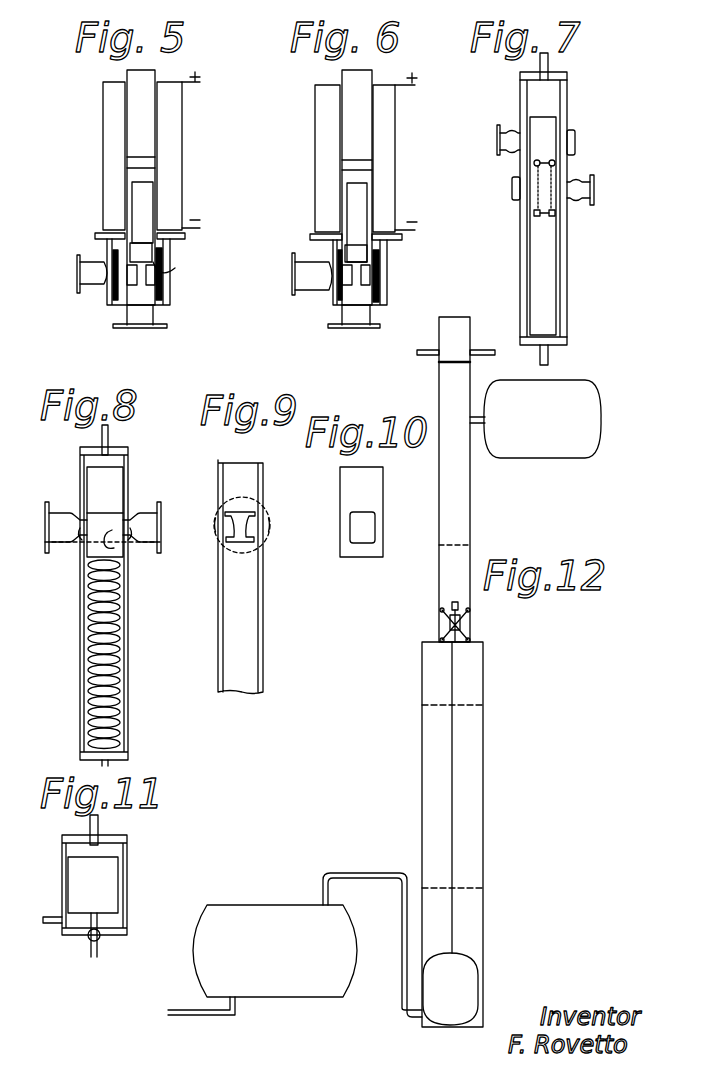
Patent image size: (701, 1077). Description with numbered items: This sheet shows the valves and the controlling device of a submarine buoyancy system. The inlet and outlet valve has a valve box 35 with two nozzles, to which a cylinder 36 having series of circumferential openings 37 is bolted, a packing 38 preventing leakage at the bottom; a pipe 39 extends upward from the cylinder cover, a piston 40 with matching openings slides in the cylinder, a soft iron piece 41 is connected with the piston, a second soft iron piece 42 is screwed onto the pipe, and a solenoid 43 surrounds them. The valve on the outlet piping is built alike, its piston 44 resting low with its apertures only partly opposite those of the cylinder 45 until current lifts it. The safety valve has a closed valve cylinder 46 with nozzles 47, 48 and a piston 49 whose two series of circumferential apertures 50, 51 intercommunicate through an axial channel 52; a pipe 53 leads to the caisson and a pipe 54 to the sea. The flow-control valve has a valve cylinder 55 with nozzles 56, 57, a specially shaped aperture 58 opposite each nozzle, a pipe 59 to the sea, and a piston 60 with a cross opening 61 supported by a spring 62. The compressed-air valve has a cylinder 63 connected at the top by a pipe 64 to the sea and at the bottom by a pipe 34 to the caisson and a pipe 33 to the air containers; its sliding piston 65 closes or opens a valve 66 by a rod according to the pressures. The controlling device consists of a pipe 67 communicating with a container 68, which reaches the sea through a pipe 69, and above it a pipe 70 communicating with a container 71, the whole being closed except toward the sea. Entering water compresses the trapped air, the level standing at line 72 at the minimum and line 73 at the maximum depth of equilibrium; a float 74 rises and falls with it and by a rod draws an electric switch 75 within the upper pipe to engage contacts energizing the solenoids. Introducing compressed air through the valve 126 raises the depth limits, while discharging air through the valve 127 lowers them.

In FIG. 11, the pipe 33 is at (92, 945).
In FIG. 11, the pipe 34 is at (50, 915).
In FIG. 5, the valve box 35 is at (160, 276).
In FIG. 5, the cylinder 36 is at (155, 255).
In FIG. 5, the circumferential openings 37 is at (112, 258).
In FIG. 5, the packing 38 is at (155, 308).
In FIG. 5, the pipe 39 is at (152, 177).
In FIG. 5, the piston 40 is at (175, 268).
In FIG. 5, the soft iron piece 41 is at (143, 200).
In FIG. 5, the soft iron piece 42 is at (155, 115).
In FIG. 5, the solenoid 43 is at (110, 112).
In FIG. 6, the piston 44 is at (340, 300).
In FIG. 6, the cylinder 45 is at (372, 245).
In FIG. 7, the valve cylinder 46 is at (565, 293).
In FIG. 7, the nozzle 47 is at (505, 135).
In FIG. 7, the nozzle 48 is at (580, 198).
In FIG. 7, the piston 49 is at (548, 243).
In FIG. 7, the circumferential apertures 50 is at (556, 163).
In FIG. 7, the circumferential apertures 51 is at (535, 213).
In FIG. 7, the channel 52 is at (545, 182).
In FIG. 7, the pipe 53 is at (548, 350).
In FIG. 7, the pipe 54 is at (548, 62).
In FIG. 8, the valve cylinder 55 is at (128, 612).
In FIG. 9, the valve cylinder 55 is at (263, 480).
In FIG. 8, the nozzle 56 is at (137, 525).
In FIG. 8, the nozzle 57 is at (55, 512).
In FIG. 8, the aperture 58 is at (82, 530).
In FIG. 9, the aperture 58 is at (250, 515).
In FIG. 8, the pipe 59 is at (108, 430).
In FIG. 8, the piston 60 is at (110, 478).
In FIG. 10, the piston 60 is at (375, 478).
In FIG. 8, the cross opening 61 is at (112, 545).
In FIG. 10, the cross opening 61 is at (370, 525).
In FIG. 8, the spring 62 is at (115, 648).
In FIG. 11, the cylinder 63 is at (125, 890).
In FIG. 11, the pipe 64 is at (98, 822).
In FIG. 11, the piston 65 is at (105, 867).
In FIG. 11, the valve 66 is at (98, 938).
In FIG. 12, the pipe 67 is at (468, 770).
In FIG. 12, the container 68 is at (280, 900).
In FIG. 12, the pipe 69 is at (190, 995).
In FIG. 12, the pipe 70 is at (463, 515).
In FIG. 12, the container 71 is at (530, 458).
In FIG. 12, the line 72 is at (460, 728).
In FIG. 12, the line 73 is at (458, 543).
In FIG. 12, the float 74 is at (462, 972).
In FIG. 12, the electric switch 75 is at (460, 622).
In FIG. 12, the valve 126 is at (495, 345).
In FIG. 12, the valve 127 is at (430, 352).